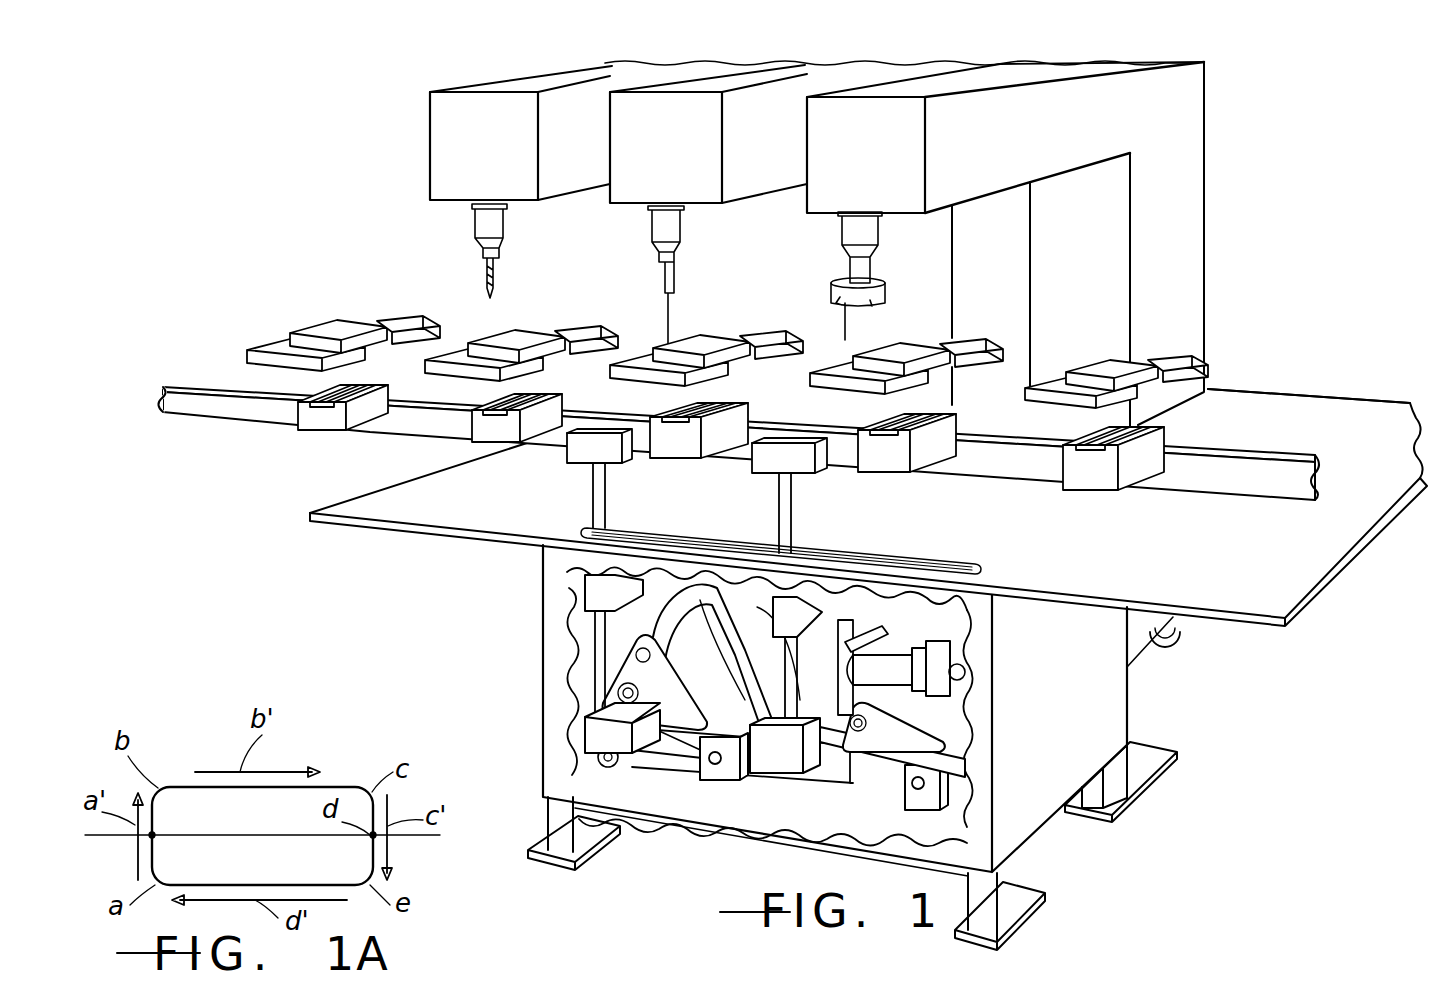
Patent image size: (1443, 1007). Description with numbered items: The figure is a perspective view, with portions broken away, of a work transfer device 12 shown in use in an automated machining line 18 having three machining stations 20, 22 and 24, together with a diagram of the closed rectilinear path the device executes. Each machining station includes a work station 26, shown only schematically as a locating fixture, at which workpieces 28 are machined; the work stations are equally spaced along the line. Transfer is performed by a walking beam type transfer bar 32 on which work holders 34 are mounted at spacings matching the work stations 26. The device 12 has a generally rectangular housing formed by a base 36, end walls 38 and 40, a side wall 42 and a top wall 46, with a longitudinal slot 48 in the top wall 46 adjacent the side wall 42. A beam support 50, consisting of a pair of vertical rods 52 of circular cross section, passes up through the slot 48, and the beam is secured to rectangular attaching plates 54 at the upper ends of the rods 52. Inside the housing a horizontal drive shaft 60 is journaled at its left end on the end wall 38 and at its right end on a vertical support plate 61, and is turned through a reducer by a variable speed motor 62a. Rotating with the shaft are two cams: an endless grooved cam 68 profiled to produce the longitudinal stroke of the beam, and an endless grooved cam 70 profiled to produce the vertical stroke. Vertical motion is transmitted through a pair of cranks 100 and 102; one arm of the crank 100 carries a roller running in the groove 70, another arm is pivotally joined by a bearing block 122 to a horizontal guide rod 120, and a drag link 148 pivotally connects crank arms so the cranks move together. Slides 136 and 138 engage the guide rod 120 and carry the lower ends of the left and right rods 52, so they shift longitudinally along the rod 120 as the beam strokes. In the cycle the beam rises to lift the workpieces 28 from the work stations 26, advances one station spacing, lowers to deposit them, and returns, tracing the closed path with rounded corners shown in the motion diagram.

The work transfer device 12 is at (839, 688).
The automated machining line 18 is at (1282, 315).
The machining station 20 is at (458, 243).
The machining station 22 is at (644, 265).
The machining station 24 is at (806, 252).
The work station 26 is at (753, 338).
The workpiece 28 is at (325, 332).
The transfer bar 32 is at (252, 422).
The work holder 34 is at (330, 430).
The base 36 is at (905, 857).
The end wall 38 is at (578, 680).
The end wall 40 is at (1020, 825).
The side wall 42 is at (690, 814).
The top wall 46 is at (860, 451).
The longitudinal slot 48 is at (958, 568).
The beam support 50 is at (562, 488).
The vertical rod 52 is at (606, 520).
The attaching plate 54 is at (575, 450).
The drive shaft 60 is at (885, 665).
The vertical support plate 61 is at (873, 627).
The variable speed motor 62a is at (1178, 648).
The endless grooved cam 68 is at (720, 630).
The endless grooved cam 70 is at (728, 612).
The crank 100 is at (618, 646).
The crank 102 is at (945, 744).
The guide rod 120 is at (893, 762).
The bearing block 122 is at (735, 785).
The slide 136 is at (595, 735).
The slide 138 is at (790, 778).
The drag link 148 is at (672, 760).